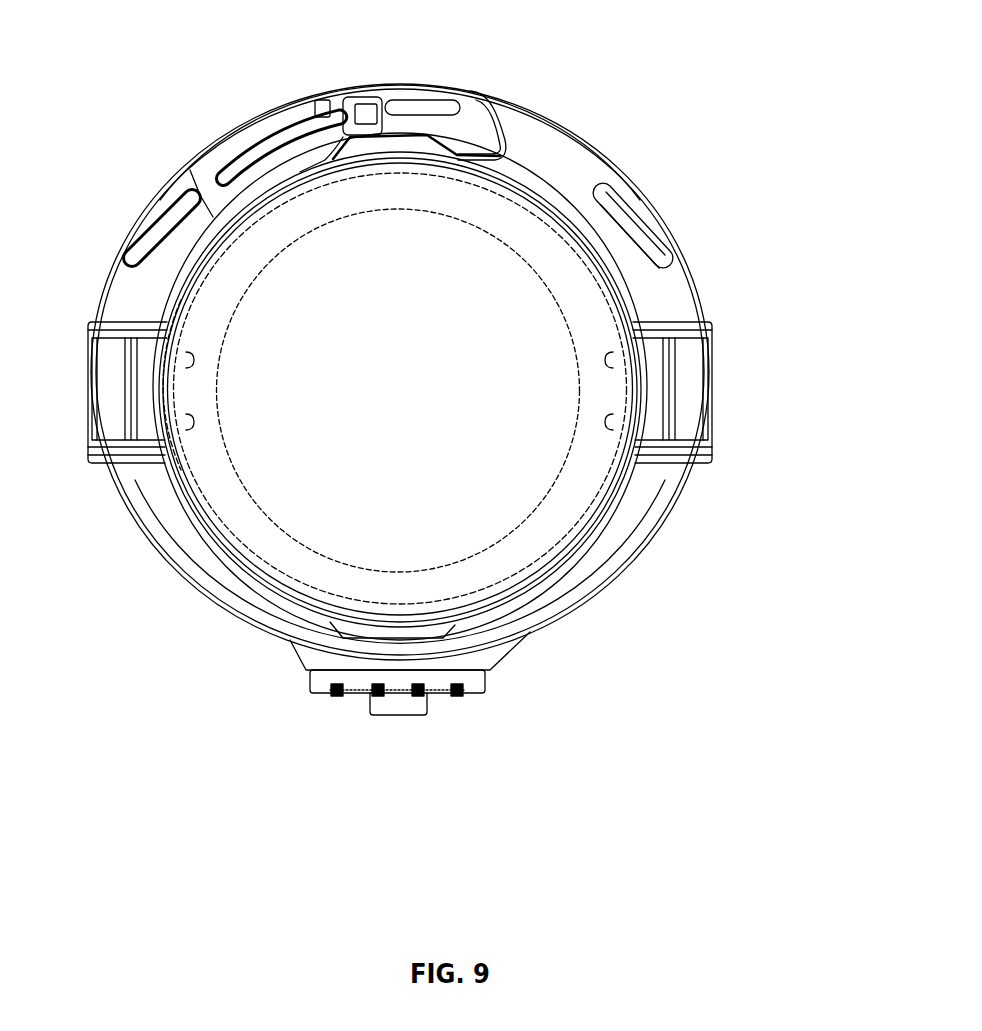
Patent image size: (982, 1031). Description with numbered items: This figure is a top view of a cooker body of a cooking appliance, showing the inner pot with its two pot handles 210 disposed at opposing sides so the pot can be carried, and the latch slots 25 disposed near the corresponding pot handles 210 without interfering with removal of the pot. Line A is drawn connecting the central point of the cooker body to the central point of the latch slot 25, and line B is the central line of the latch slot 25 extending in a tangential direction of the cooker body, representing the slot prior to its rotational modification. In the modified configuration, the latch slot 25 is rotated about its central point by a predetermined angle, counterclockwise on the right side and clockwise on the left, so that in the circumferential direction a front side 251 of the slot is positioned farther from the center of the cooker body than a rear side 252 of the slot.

The rear side of the latch slot 252 is at (500, 147).
The latch slot 25 is at (615, 240).
The front side of the latch slot 251 is at (670, 253).
The pot handle 210 is at (143, 375).
The line A is at (95, 593).
The line B is at (482, 15).